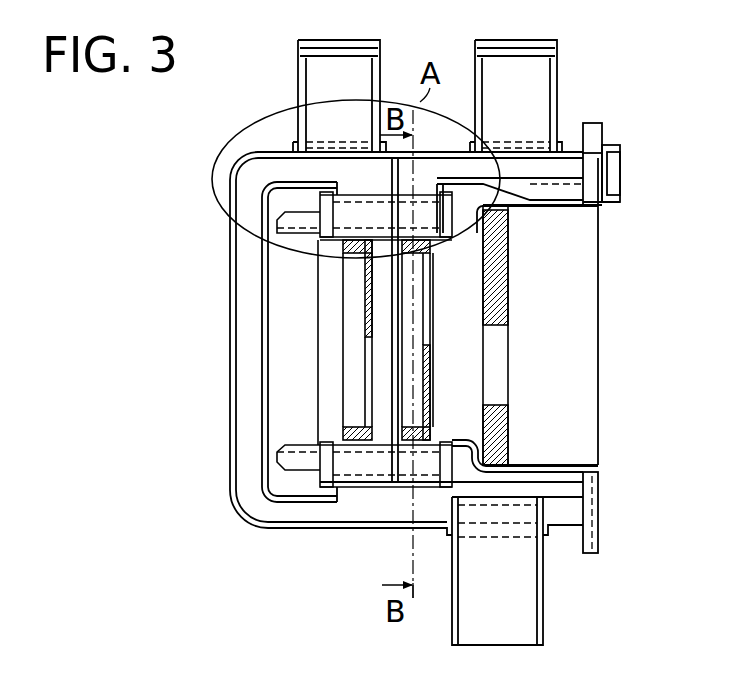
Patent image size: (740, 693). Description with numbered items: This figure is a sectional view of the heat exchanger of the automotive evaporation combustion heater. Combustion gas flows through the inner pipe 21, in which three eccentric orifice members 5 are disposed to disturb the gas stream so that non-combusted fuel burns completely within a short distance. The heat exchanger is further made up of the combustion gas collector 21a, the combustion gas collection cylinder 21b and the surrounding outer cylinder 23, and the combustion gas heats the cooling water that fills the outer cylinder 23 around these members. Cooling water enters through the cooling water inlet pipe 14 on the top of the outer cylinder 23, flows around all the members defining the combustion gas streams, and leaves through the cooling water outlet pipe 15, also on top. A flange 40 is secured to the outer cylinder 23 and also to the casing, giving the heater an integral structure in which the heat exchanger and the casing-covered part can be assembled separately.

The eccentric orifice member 5 is at (365, 300).
The cooling water inlet pipe 14 is at (298, 82).
The cooling water outlet pipe 15 is at (553, 96).
The inner pipe 21 is at (455, 440).
The combustion gas collector 21a is at (262, 190).
The combustion gas collection cylinder 21b is at (461, 238).
The outer cylinder 23 is at (229, 270).
The flange 40 is at (600, 546).